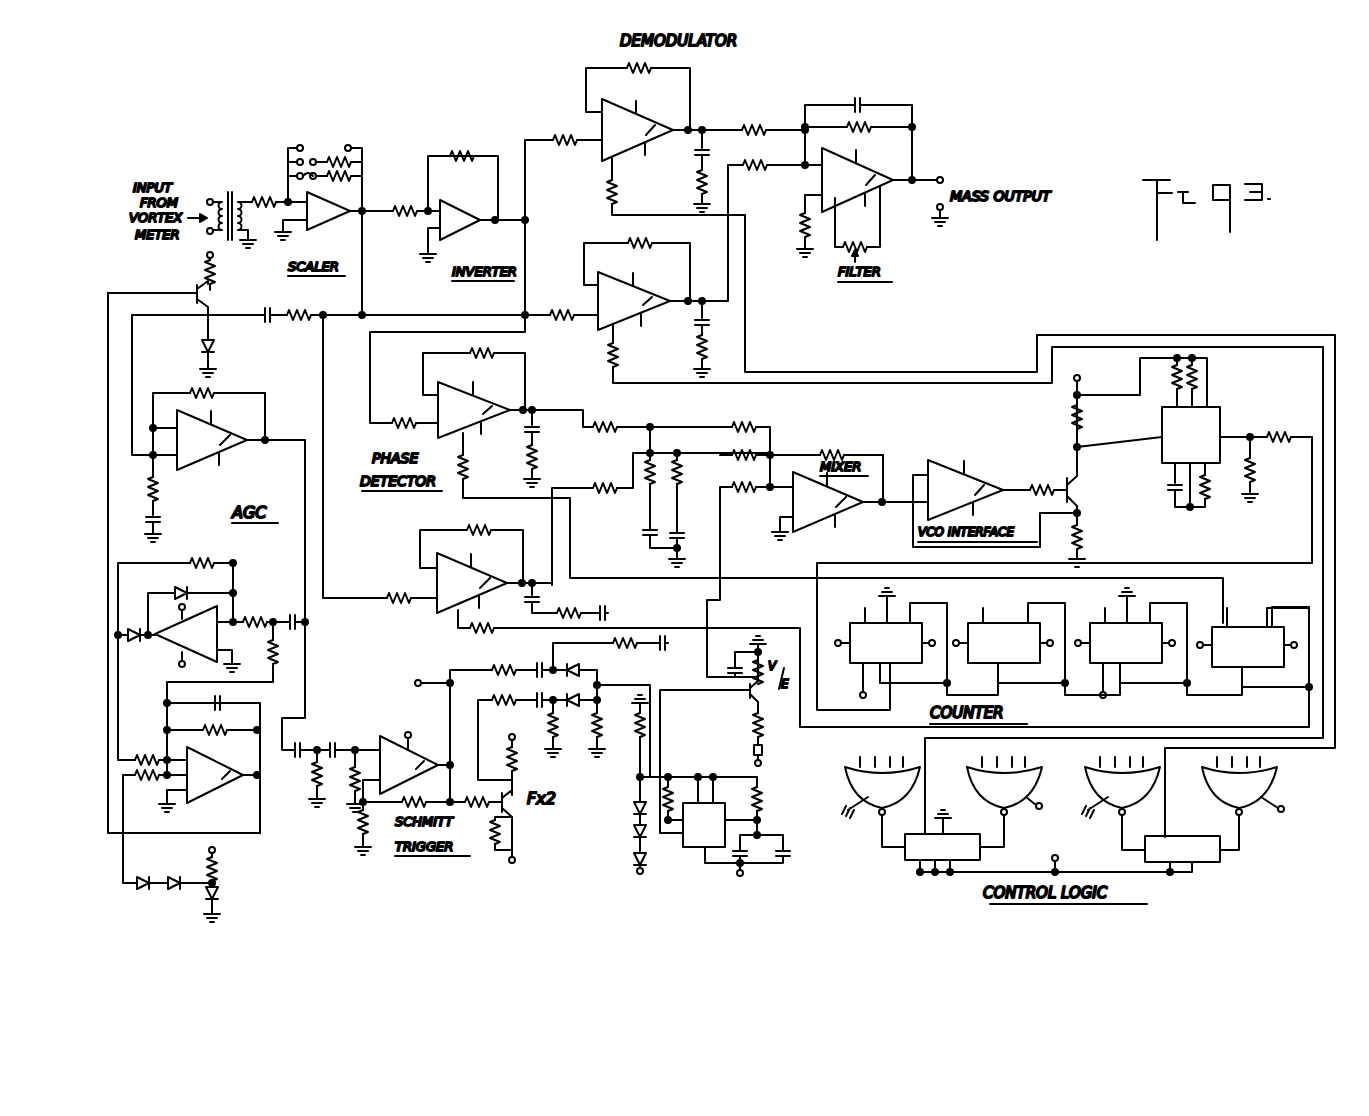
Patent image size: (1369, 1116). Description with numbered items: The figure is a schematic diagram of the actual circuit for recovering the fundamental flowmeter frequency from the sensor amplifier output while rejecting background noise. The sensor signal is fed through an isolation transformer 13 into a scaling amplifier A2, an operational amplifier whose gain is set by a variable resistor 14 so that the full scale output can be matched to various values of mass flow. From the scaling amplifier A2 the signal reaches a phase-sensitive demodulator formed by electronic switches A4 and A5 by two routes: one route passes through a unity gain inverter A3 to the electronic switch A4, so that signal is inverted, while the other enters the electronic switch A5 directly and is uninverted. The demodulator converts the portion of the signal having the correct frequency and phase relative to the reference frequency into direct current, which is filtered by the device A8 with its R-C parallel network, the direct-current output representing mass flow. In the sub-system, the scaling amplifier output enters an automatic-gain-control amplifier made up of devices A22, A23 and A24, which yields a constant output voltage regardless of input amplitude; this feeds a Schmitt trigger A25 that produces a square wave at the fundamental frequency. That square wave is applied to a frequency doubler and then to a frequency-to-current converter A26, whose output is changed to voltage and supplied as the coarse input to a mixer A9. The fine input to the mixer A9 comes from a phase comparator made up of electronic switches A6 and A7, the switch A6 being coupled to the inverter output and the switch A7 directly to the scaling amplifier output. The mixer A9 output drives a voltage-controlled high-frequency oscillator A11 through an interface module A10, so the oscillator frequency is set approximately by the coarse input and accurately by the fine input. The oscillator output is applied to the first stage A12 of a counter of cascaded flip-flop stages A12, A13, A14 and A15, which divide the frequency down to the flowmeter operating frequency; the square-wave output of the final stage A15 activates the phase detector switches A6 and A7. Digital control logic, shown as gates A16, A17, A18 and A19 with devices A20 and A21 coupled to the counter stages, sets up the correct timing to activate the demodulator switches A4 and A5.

The isolation transformer 13 is at (226, 200).
The variable resistor 14 is at (317, 150).
The scaling amplifier A2 is at (328, 222).
The unity gain inverter A3 is at (468, 225).
The electronic switch A4 is at (650, 122).
The electronic switch A5 is at (655, 292).
The electronic switch A6 is at (438, 403).
The electronic switch A7 is at (437, 578).
The filter device A8 is at (822, 177).
The mixer A9 is at (820, 508).
The interface module A10 is at (940, 466).
The voltage-controlled high-frequency oscillator A11 is at (1222, 410).
The first counter stage A12 is at (886, 643).
The counter stage A13 is at (1004, 643).
The counter stage A14 is at (1126, 643).
The final counter stage A15 is at (1248, 647).
The control logic gate A16 is at (882, 786).
The control logic gate A17 is at (1004, 786).
The control logic gate A18 is at (1122, 786).
The control logic gate A19 is at (1239, 786).
The control logic device A20 is at (942, 847).
The control logic device A21 is at (1182, 849).
The automatic-gain-control amplifier device A22 is at (210, 448).
The automatic-gain-control amplifier device A23 is at (174, 639).
The automatic-gain-control amplifier device A24 is at (215, 781).
The Schmitt trigger A25 is at (383, 738).
The frequency-to-current converter A26 is at (694, 850).